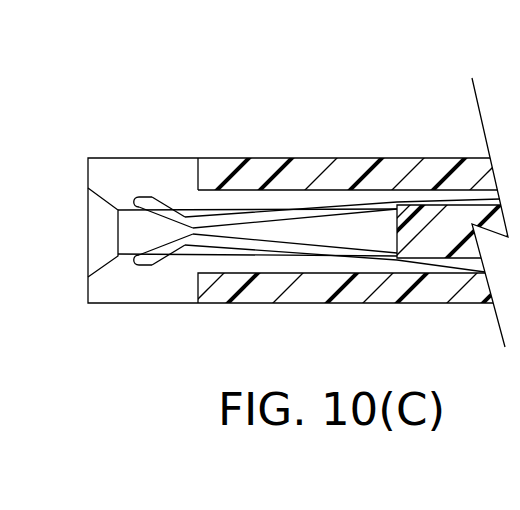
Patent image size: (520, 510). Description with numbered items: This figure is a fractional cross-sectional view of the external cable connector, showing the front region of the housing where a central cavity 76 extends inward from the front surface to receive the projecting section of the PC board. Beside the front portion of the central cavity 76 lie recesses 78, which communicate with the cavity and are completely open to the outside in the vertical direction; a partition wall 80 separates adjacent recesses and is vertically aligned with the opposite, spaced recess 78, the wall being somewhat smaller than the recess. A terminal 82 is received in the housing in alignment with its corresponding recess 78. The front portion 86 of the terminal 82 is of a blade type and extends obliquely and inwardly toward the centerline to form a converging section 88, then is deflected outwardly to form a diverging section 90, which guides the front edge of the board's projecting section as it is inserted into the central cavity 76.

The partition wall 80 is at (109, 178).
The recess 78 is at (182, 171).
The central cavity 76 is at (236, 266).
The terminal 82 is at (431, 192).
The front portion 86 is at (318, 205).
The converging section 88 is at (207, 221).
The diverging section 90 is at (150, 204).